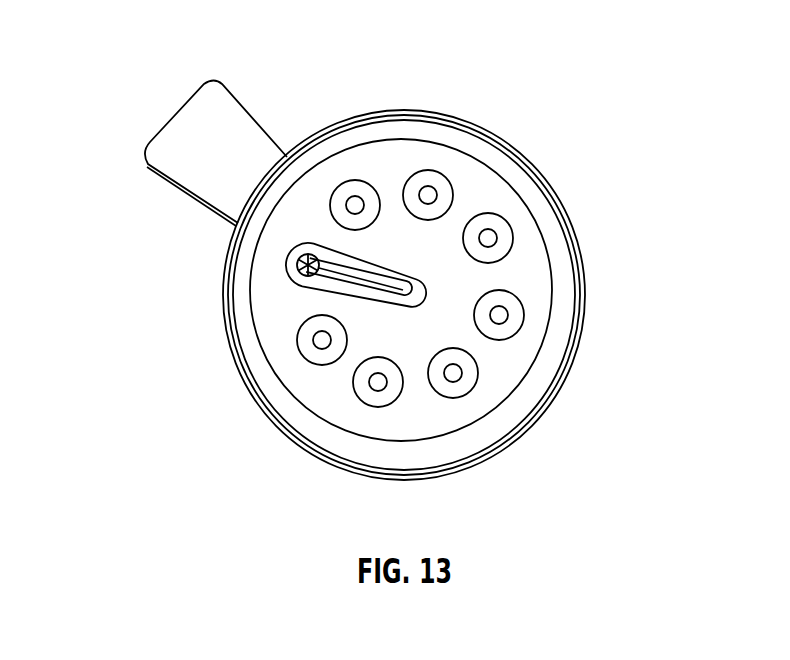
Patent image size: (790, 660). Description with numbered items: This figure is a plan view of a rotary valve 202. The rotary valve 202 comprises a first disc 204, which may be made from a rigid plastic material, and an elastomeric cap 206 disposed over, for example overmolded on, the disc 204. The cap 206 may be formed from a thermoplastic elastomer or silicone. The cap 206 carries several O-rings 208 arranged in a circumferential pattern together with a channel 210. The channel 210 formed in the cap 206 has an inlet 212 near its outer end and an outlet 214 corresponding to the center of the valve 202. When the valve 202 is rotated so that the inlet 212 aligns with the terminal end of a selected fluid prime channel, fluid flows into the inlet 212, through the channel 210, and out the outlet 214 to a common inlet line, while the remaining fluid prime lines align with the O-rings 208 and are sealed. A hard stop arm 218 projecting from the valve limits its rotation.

The rotary valve 202 is at (262, 42).
The first disc 204 is at (463, 113).
The elastomeric cap 206 is at (543, 297).
The O-rings 208 is at (510, 228).
The channel 210 is at (334, 295).
The inlet 212 is at (288, 262).
The outlet 214 is at (395, 293).
The hard stop arm 218 is at (136, 166).